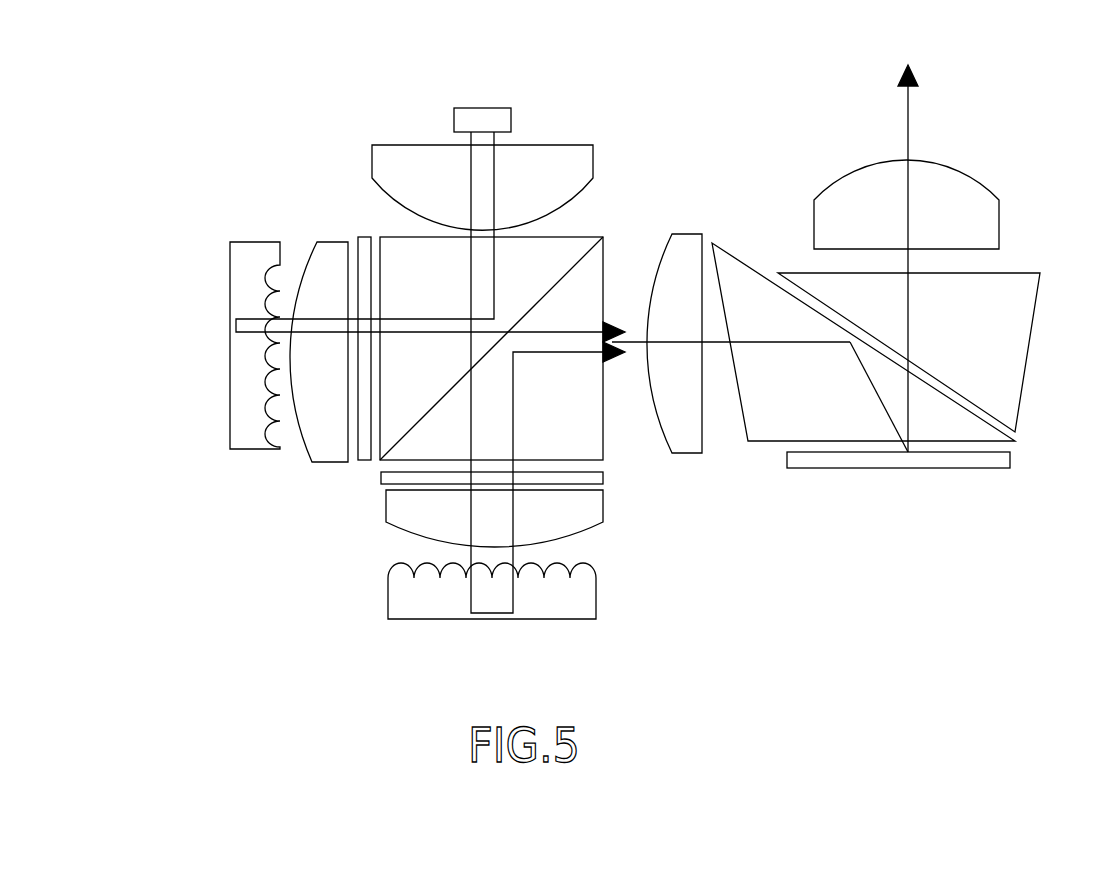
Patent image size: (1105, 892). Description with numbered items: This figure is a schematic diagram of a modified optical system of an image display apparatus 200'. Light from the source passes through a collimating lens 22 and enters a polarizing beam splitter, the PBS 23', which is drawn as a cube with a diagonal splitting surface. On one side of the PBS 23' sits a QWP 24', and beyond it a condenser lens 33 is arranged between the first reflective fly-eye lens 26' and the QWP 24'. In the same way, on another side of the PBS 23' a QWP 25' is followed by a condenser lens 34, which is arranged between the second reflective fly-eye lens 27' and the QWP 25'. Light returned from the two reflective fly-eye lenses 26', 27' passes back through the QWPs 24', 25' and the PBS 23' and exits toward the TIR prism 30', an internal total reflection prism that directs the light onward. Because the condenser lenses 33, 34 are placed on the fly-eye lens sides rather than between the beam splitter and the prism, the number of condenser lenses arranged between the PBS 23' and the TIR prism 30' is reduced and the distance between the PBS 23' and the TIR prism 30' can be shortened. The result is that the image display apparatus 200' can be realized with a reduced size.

The collimating lens 22 is at (520, 130).
The PBS 23' is at (516, 314).
The QWP 24' is at (347, 312).
The QWP 25' is at (524, 499).
The first reflective fly-eye lens 26' is at (221, 345).
The second reflective fly-eye lens 27' is at (497, 618).
The TIR prism 30' is at (876, 324).
The condenser lens 33 is at (305, 448).
The condenser lens 34 is at (582, 538).
The image display apparatus 200' is at (678, 50).